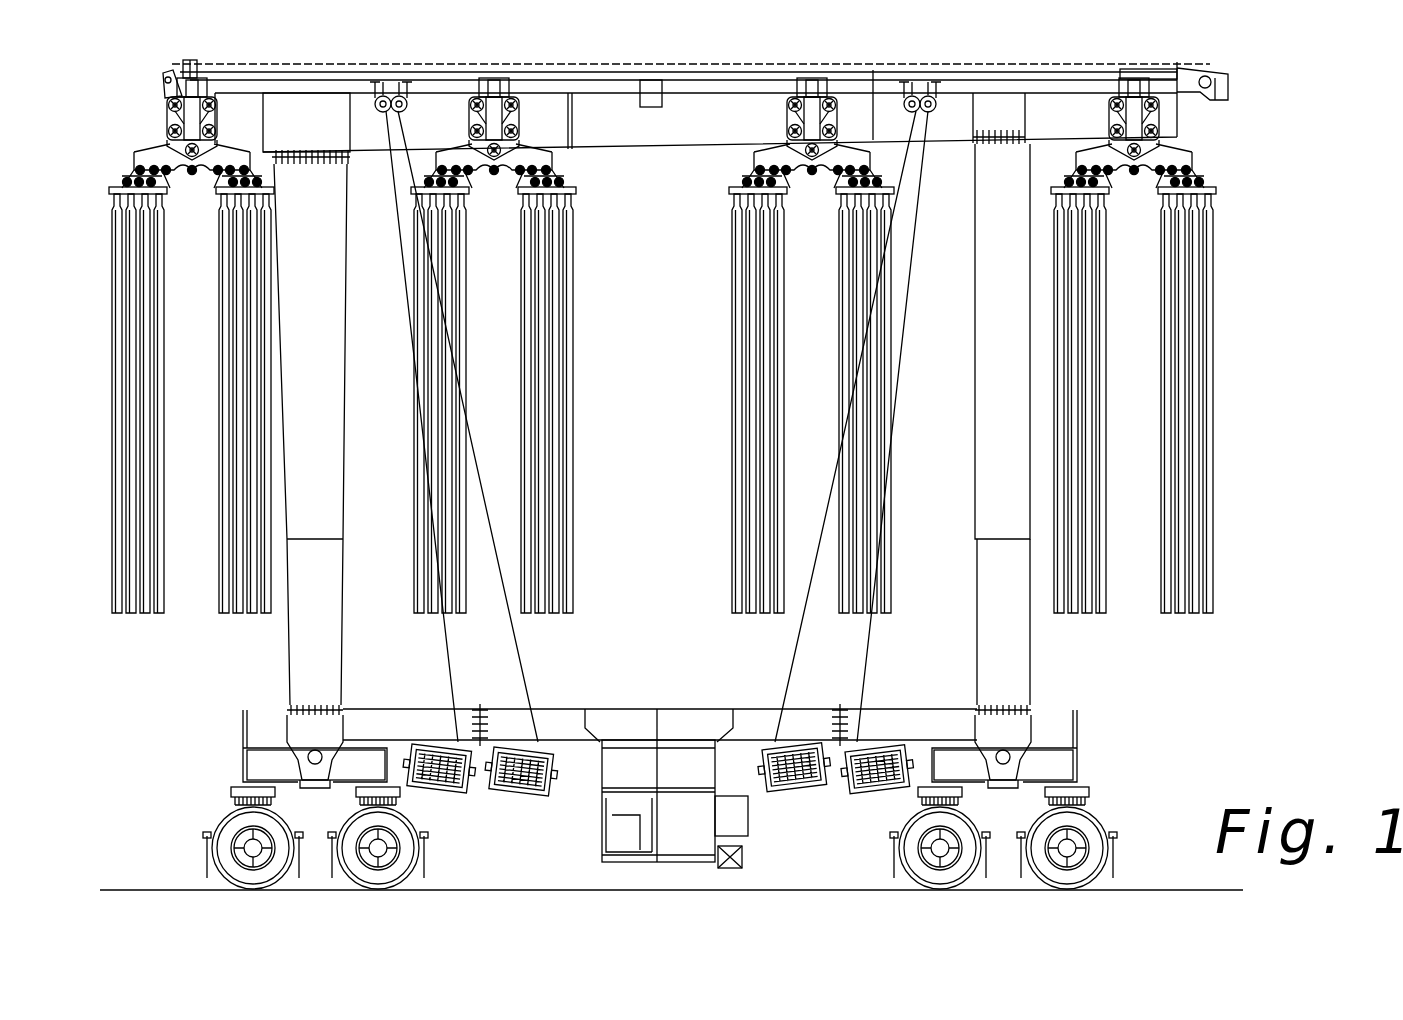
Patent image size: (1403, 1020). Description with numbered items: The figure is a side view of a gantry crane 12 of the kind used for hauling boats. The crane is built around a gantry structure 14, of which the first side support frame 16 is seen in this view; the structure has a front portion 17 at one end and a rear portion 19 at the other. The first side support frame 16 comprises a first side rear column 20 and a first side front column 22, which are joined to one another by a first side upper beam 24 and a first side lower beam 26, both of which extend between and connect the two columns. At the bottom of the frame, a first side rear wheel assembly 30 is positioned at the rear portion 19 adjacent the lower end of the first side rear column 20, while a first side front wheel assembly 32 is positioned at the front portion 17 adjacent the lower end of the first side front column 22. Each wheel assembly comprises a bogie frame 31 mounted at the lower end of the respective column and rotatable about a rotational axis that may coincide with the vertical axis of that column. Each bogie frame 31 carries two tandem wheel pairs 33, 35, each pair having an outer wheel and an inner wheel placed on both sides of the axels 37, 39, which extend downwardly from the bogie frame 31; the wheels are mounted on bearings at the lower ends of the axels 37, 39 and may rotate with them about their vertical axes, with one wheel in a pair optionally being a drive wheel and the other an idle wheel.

The gantry crane 12 is at (1278, 104).
The gantry structure 14 is at (1065, 58).
The first side support frame 16 is at (968, 258).
The front portion 17 is at (218, 628).
The rear portion 19 is at (1046, 634).
The first side rear column 20 is at (990, 463).
The first side front column 22 is at (323, 612).
The first side upper beam 24 is at (672, 141).
The first side lower beam 26 is at (571, 708).
The first side rear wheel assembly 30 is at (1100, 744).
The bogie frame 31 is at (245, 765).
The first side front wheel assembly 32 is at (222, 748).
The tandem wheel pair 33 is at (220, 882).
The tandem wheel pair 35 is at (412, 880).
The axel 37 is at (253, 851).
The axel 39 is at (378, 851).